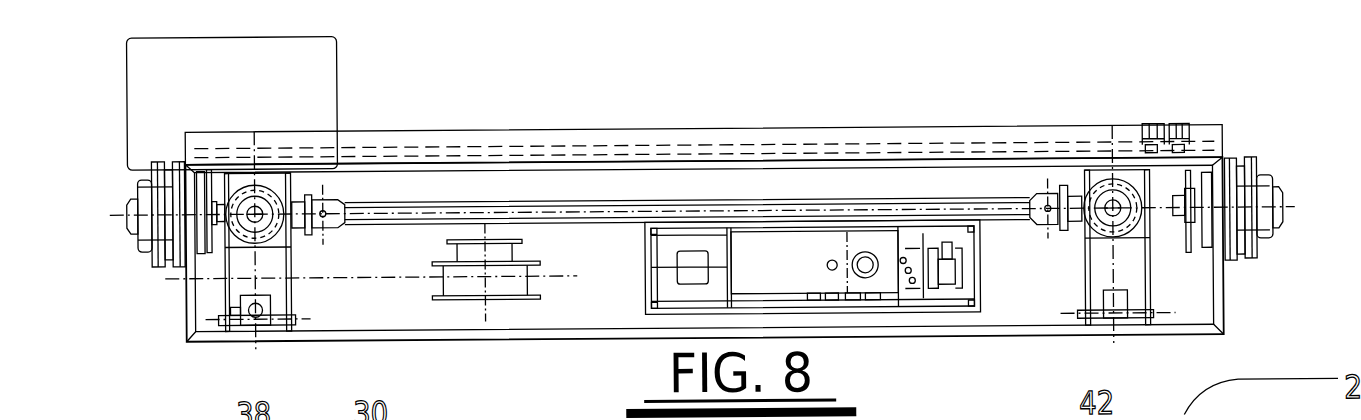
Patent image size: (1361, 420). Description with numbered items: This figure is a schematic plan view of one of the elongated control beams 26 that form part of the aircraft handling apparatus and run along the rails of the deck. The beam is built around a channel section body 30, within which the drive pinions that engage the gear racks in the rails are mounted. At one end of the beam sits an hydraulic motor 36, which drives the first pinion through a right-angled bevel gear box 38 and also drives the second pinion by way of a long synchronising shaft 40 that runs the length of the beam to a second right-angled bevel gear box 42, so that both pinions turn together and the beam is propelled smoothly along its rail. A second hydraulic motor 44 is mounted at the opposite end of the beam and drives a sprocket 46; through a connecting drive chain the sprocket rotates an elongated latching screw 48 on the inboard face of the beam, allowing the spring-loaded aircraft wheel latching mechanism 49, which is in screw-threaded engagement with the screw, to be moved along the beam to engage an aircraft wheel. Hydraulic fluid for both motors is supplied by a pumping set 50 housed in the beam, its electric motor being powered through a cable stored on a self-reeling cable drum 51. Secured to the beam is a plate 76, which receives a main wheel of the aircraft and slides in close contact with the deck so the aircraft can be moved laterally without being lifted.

The control beam 26 is at (478, 130).
The channel section body 30 is at (362, 334).
The hydraulic motor 36 is at (133, 237).
The right-angled bevel gear box 38 is at (267, 190).
The synchronising shaft 40 is at (538, 213).
The right-angled bevel gear box 42 is at (1110, 205).
The second hydraulic motor 44 is at (1273, 221).
The sprocket 46 is at (1191, 174).
The latching screw 48 is at (885, 150).
The aircraft wheel latching mechanism 49 is at (1155, 127).
The pumping set 50 is at (758, 240).
The self-reeling cable drum 51 is at (492, 309).
The plate 76 is at (288, 85).